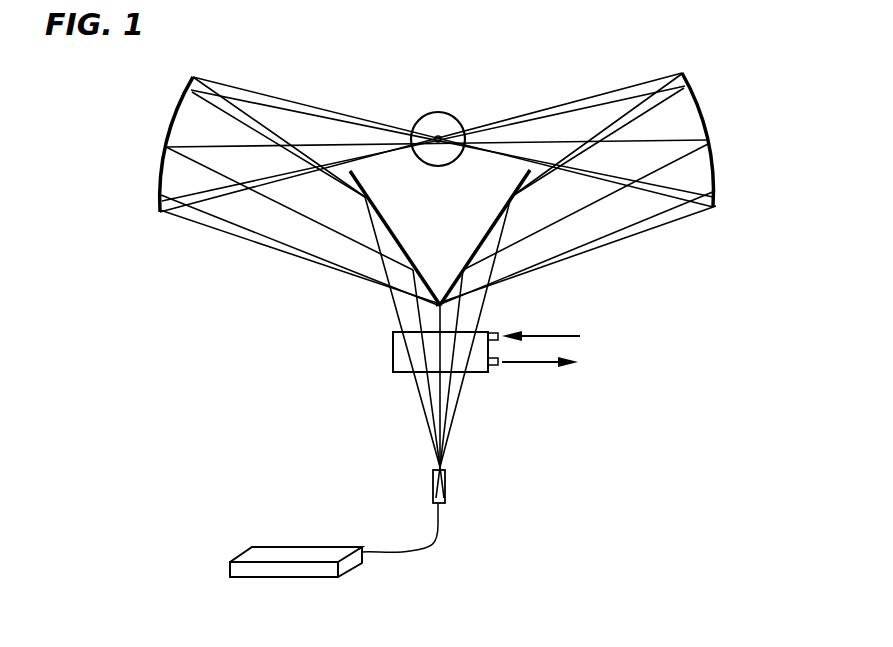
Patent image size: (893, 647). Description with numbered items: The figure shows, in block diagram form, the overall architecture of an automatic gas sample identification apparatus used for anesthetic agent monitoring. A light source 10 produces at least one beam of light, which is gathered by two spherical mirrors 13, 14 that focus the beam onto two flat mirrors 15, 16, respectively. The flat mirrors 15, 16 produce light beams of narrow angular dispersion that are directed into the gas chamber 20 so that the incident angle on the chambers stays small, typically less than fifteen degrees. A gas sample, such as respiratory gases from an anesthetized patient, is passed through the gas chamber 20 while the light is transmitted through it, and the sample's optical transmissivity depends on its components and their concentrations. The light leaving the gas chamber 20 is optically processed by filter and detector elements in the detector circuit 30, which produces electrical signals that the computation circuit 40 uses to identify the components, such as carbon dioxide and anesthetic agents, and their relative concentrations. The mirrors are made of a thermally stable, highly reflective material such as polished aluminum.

The light source 10 is at (455, 115).
The spherical mirror 13 is at (705, 108).
The spherical mirror 14 is at (170, 125).
The flat mirror 15 is at (493, 227).
The flat mirror 16 is at (380, 213).
The gas chamber 20 is at (393, 343).
The detector circuit 30 is at (433, 495).
The computation circuit 40 is at (248, 548).